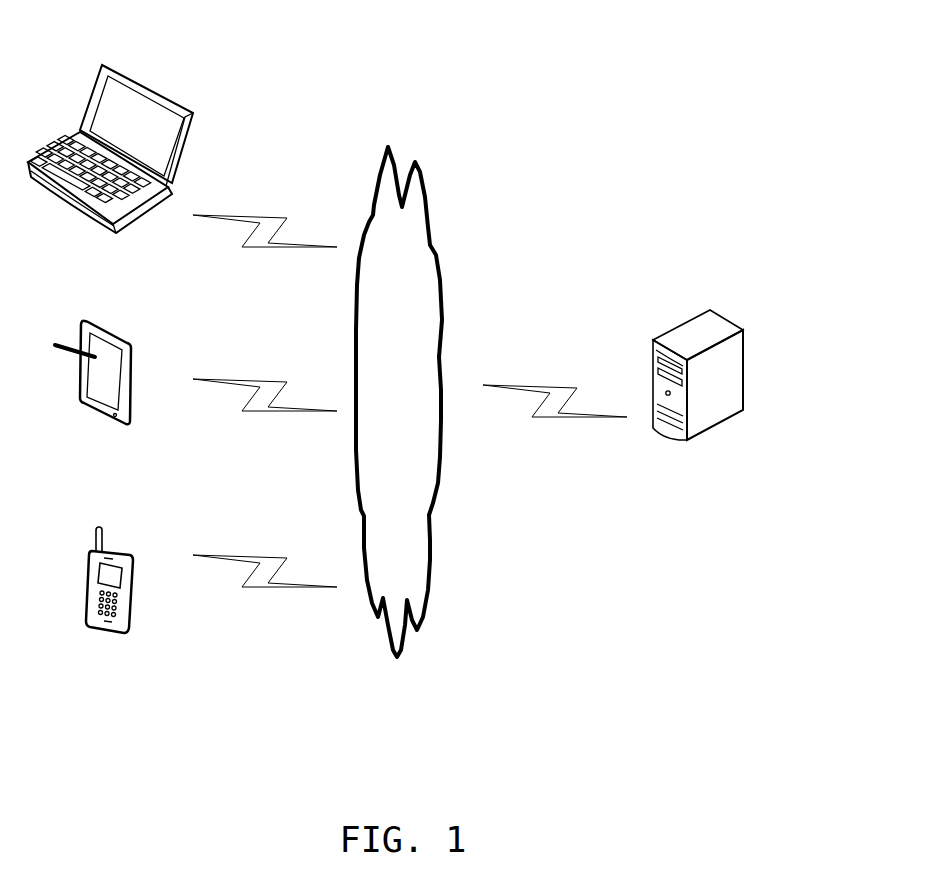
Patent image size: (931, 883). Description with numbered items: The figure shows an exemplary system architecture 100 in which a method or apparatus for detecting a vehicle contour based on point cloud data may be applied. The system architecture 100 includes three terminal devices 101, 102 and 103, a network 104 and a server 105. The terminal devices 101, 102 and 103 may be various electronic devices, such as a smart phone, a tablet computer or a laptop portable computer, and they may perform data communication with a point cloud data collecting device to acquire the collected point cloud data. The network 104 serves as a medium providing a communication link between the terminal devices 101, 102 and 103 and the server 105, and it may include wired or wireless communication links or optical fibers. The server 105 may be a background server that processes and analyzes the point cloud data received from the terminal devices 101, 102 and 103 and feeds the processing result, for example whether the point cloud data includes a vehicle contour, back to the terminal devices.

The system architecture 100 is at (610, 56).
The terminal device 101 is at (109, 601).
The terminal device 102 is at (93, 393).
The terminal device 103 is at (110, 165).
The network 104 is at (399, 402).
The server 105 is at (698, 397).